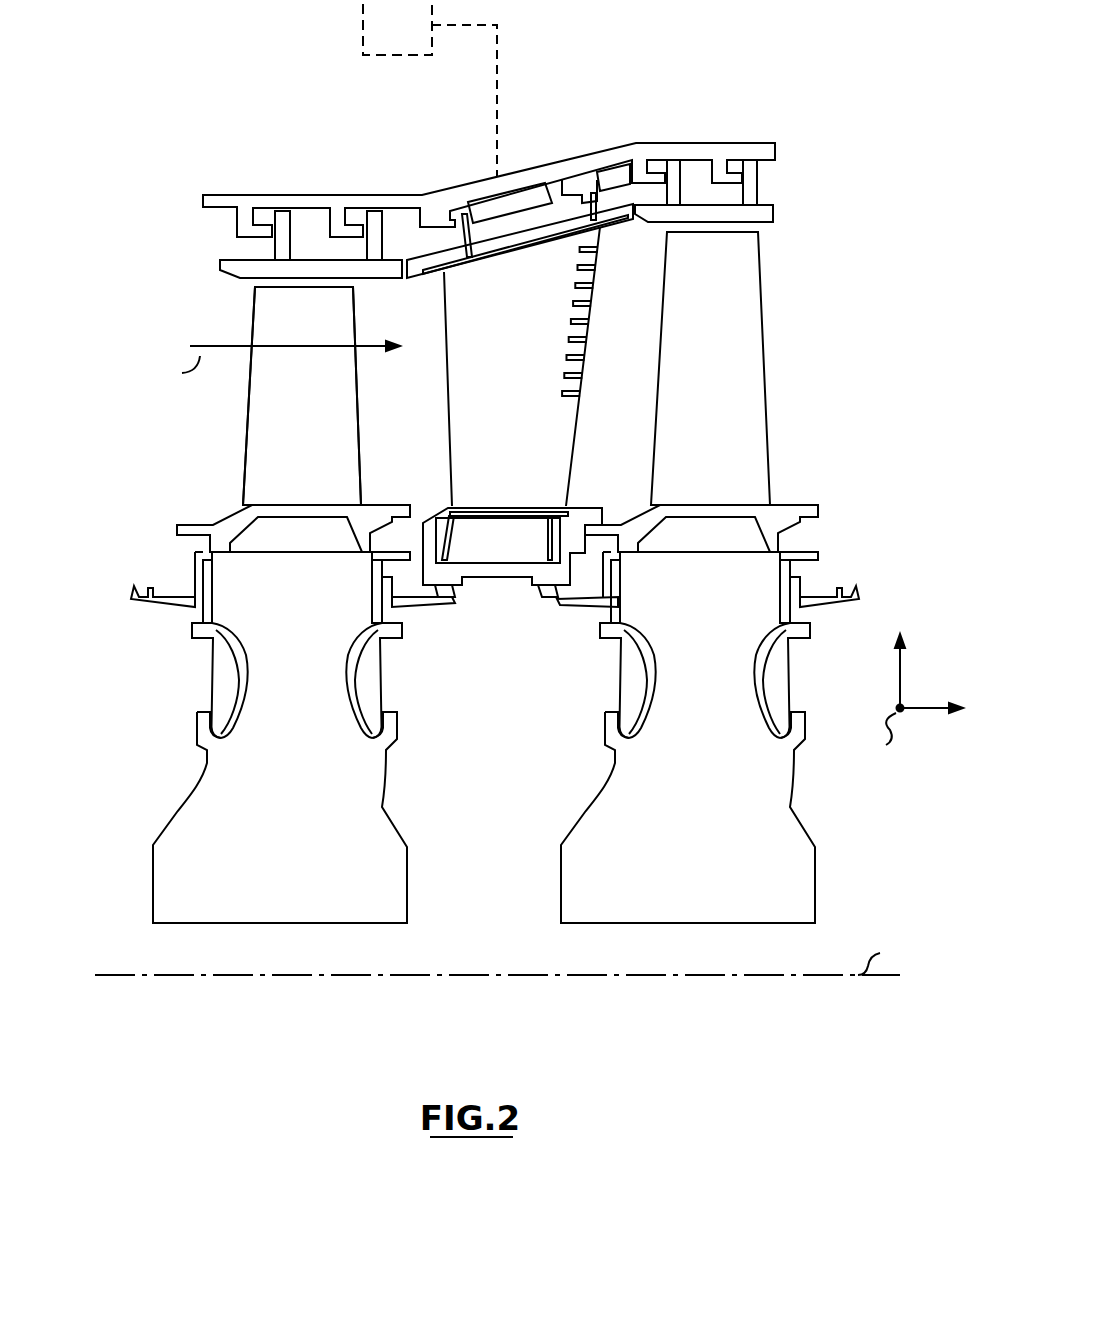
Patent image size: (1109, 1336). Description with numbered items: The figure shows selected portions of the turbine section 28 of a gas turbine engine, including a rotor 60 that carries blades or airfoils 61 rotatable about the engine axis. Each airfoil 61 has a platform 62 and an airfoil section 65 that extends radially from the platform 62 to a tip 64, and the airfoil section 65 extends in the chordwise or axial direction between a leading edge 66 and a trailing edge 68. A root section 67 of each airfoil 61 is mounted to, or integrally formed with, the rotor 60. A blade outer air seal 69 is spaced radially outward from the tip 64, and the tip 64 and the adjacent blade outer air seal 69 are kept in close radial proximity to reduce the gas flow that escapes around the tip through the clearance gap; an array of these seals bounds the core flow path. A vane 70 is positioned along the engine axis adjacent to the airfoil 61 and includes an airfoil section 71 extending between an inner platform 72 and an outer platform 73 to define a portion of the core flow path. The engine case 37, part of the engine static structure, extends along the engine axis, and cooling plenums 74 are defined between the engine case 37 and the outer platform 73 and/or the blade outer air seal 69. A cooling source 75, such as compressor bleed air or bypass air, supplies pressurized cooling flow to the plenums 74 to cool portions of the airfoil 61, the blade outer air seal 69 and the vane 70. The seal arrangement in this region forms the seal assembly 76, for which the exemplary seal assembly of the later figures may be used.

The turbine section 28 is at (125, 133).
The engine case 37 is at (262, 194).
The rotor 60 is at (176, 814).
The airfoil 61 is at (509, 368).
The platform 62 is at (192, 525).
The tip 64 is at (276, 283).
The airfoil section 65 is at (278, 403).
The leading edge 66 is at (246, 446).
The root section 67 is at (230, 601).
The trailing edge 68 is at (360, 450).
The blade outer air seal 69 is at (492, 220).
The vane 70 is at (548, 366).
The airfoil section 71 is at (540, 444).
The inner platform 72 is at (588, 507).
The outer platform 73 is at (616, 224).
The cooling plenum 74 is at (314, 234).
The cooling source 75 is at (383, 40).
The seal assembly 76 is at (618, 128).